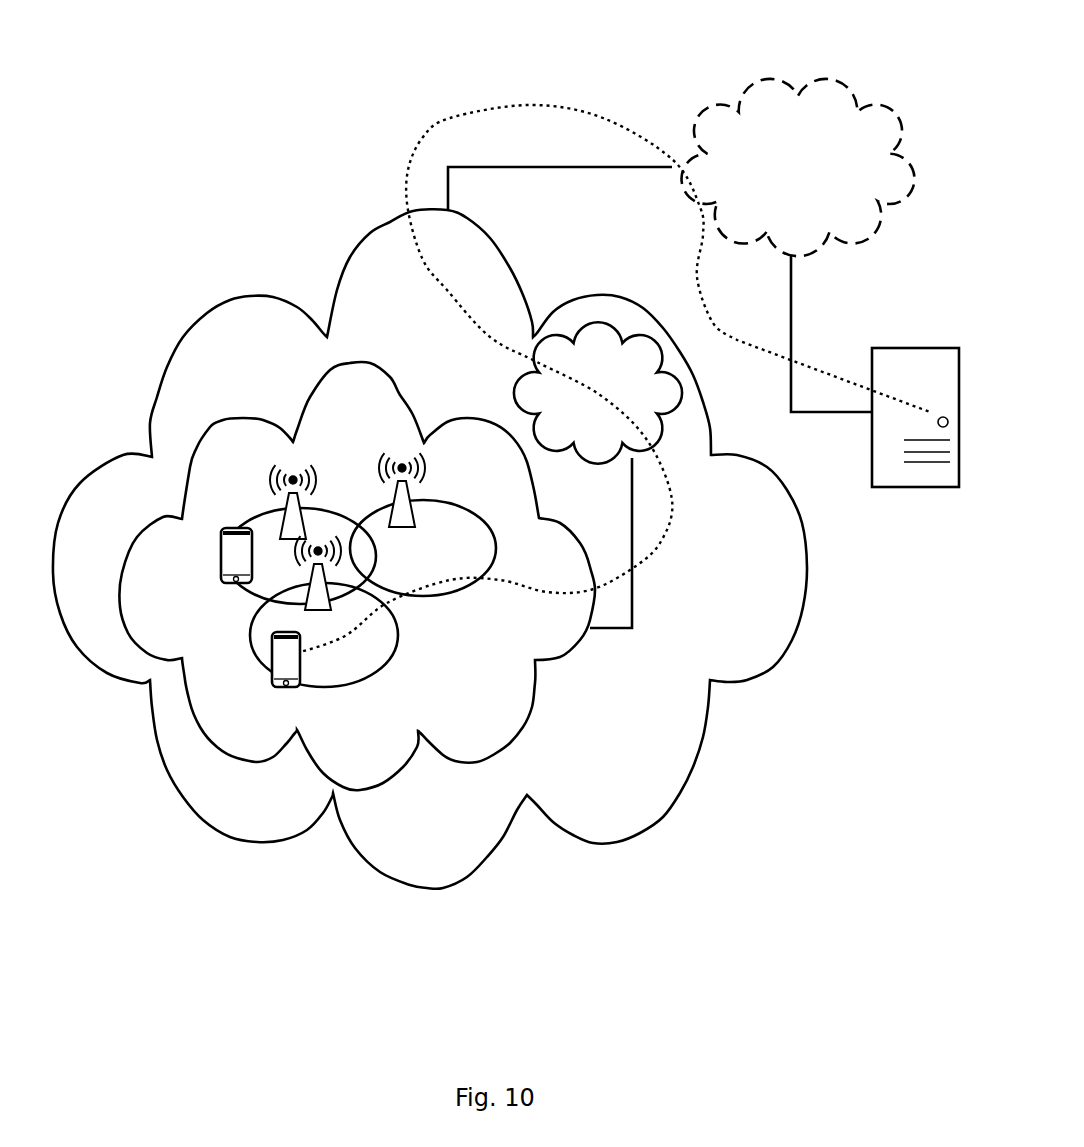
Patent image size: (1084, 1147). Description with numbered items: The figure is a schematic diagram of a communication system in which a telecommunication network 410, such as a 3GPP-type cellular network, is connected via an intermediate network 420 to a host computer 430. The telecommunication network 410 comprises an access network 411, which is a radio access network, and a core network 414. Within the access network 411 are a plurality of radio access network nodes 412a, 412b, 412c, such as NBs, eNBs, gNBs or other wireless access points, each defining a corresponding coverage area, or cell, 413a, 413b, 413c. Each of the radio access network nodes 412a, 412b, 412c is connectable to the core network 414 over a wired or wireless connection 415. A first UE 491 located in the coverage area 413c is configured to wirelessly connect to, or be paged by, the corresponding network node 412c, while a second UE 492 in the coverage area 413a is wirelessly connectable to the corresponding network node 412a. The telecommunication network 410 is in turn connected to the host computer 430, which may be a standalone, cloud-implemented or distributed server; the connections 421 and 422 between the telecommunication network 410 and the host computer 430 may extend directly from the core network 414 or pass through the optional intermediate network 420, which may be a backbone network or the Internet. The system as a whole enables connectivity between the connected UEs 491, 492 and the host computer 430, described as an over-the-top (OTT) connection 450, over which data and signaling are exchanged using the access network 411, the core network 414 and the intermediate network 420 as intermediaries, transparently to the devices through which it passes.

The telecommunication network 410 is at (418, 321).
The access network 411 is at (374, 431).
The radio access network node 412a is at (327, 612).
The radio access network node 412b is at (413, 480).
The radio access network node 412c is at (277, 493).
The coverage area 413a is at (397, 653).
The coverage area 413b is at (463, 593).
The coverage area 413c is at (273, 513).
The core network 414 is at (626, 379).
The wired or wireless connection 415 is at (633, 593).
The intermediate network 420 is at (818, 184).
The connection 421 is at (578, 167).
The connection 422 is at (825, 415).
The host computer 430 is at (933, 487).
The OTT connection 450 is at (425, 128).
The first UE 491 is at (222, 568).
The second UE 492 is at (272, 687).